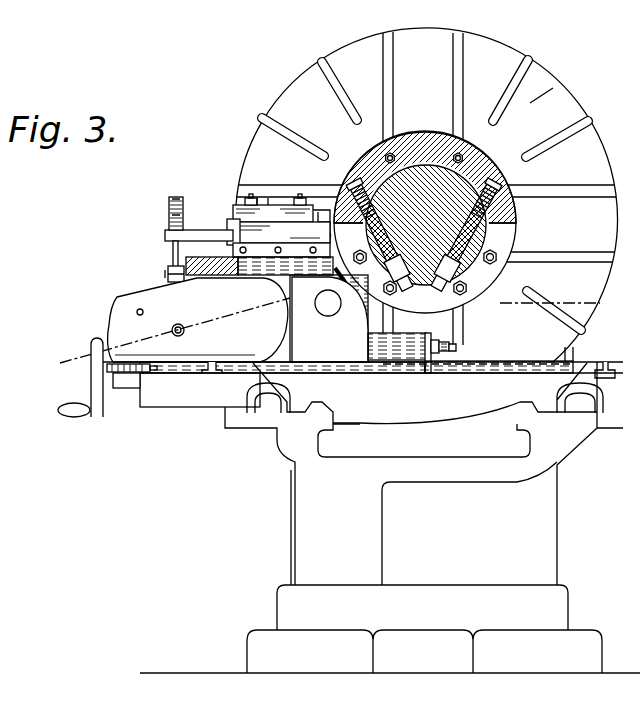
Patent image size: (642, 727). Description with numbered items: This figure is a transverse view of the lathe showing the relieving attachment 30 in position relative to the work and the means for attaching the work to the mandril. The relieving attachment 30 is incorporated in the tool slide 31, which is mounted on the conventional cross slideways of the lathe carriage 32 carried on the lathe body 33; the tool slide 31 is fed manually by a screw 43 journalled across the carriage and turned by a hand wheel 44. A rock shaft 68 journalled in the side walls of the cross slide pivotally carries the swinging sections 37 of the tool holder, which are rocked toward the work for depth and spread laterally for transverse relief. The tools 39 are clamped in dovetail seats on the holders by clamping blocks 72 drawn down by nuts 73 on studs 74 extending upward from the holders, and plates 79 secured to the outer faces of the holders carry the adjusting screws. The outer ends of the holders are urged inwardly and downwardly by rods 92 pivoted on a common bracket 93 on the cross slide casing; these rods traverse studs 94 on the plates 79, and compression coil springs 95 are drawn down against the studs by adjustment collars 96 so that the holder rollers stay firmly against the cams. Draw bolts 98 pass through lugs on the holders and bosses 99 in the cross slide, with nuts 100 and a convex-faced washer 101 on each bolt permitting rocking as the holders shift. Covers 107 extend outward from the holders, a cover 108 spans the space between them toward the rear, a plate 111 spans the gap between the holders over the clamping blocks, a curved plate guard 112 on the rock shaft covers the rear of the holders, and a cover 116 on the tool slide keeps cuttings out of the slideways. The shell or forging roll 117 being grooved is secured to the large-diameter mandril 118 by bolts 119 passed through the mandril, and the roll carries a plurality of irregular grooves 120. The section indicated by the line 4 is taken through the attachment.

The section line 4- 4 is at (72, 388).
The relieving attachment 30 is at (265, 220).
The tool slide 31 is at (310, 370).
The lathe carriage 32 is at (210, 391).
The lathe body 33 is at (302, 467).
The swinging sections of the tool holder 37 is at (238, 217).
The tools 39 is at (313, 238).
The screw 43 is at (130, 383).
The hand wheel 44 is at (93, 414).
The rock shaft 68 is at (328, 312).
The clamping blocks 72 is at (303, 199).
The nuts 73 is at (246, 198).
The studs 74 is at (259, 198).
The plates 79 is at (247, 240).
The rods 92 is at (173, 258).
The bracket 93 is at (168, 283).
The studs 94 is at (170, 234).
The compression coil springs 95 is at (169, 213).
The adjustment collars 96 is at (176, 197).
The draw bolts 98 is at (446, 347).
The bosses 99 is at (398, 343).
The nuts 100 is at (456, 348).
The washer 101 is at (437, 340).
The covers or guards 107 is at (268, 266).
The cover 108 is at (222, 256).
The plate 111 is at (269, 196).
The plate guard 112 is at (263, 277).
The cover 116 is at (517, 366).
The shell or forging roll 117 is at (401, 142).
The mandril 118 is at (483, 168).
The bolts 119 is at (473, 242).
The grooves 120 is at (361, 156).